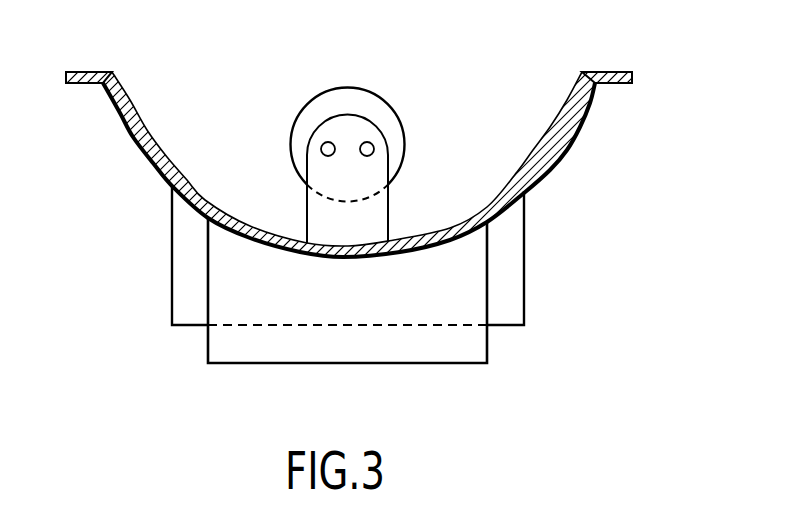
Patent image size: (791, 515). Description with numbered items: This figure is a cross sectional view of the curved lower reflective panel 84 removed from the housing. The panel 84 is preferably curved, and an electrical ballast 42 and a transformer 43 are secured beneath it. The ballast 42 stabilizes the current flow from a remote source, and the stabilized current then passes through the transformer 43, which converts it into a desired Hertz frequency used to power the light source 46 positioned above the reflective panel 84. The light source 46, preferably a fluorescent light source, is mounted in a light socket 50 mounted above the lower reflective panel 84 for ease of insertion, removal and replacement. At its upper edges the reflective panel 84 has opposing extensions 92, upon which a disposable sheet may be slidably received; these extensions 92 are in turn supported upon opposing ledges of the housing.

The electrical ballast 42 is at (172, 274).
The transformer 43 is at (212, 345).
The light source 46 is at (383, 100).
The light socket 50 is at (322, 123).
The lower reflective panel 84 is at (130, 107).
The opposing extension 92 is at (91, 72).